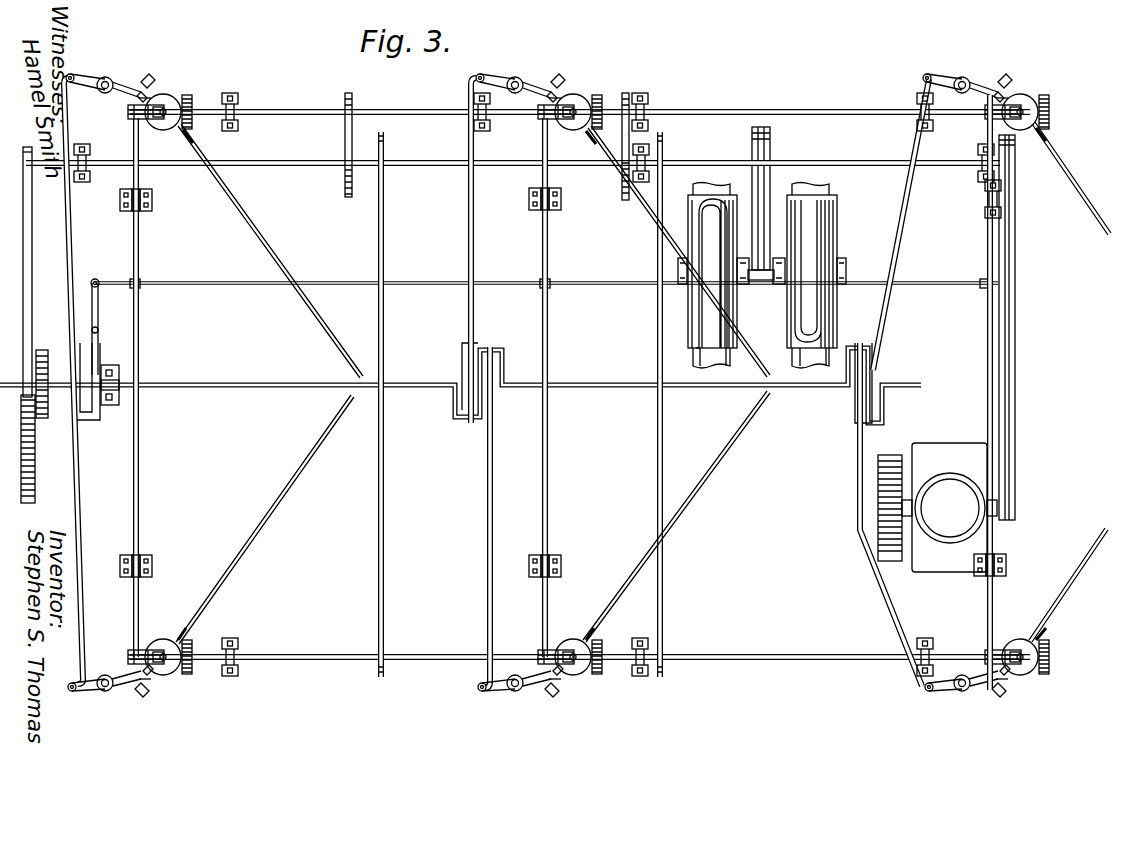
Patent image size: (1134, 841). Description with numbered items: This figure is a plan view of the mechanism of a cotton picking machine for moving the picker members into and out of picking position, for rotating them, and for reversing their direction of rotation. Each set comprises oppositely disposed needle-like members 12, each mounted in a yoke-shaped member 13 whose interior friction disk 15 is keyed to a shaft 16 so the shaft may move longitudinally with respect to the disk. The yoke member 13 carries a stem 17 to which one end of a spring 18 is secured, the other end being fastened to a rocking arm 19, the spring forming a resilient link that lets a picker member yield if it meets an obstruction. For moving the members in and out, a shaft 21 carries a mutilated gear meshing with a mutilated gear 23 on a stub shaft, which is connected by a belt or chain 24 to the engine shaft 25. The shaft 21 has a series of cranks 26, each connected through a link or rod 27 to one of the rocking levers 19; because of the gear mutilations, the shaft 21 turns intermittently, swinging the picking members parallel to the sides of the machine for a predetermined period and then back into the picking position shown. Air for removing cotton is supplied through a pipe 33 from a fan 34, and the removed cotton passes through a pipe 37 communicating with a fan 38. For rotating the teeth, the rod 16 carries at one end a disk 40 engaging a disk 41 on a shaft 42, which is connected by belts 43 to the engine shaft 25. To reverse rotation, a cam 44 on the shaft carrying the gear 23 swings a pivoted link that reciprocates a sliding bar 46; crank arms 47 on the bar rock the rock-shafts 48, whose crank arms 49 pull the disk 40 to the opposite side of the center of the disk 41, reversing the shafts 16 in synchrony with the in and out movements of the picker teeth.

The needle-like member 12 is at (255, 233).
The yoke-shaped member 13 is at (148, 88).
The friction disk 15 is at (98, 306).
The shaft 16 is at (163, 118).
The stem 17 is at (145, 82).
The spring 18 is at (140, 90).
The rocking arm 19 is at (115, 94).
The shaft 21 is at (231, 389).
The mutilated gear 23 is at (46, 418).
The belt or chain 24 is at (24, 248).
The engine shaft 25 is at (280, 166).
The cranks 26 is at (85, 352).
The link or rod 27 is at (68, 255).
The pipe 33 is at (830, 362).
The fan 34 is at (838, 230).
The pipe 37 is at (700, 370).
The fan 38 is at (738, 318).
The disk 40 is at (170, 95).
The disk 41 is at (192, 95).
The shaft 42 is at (755, 110).
The belts 43 is at (630, 96).
The cam 44 is at (118, 364).
The sliding bar 46 is at (231, 281).
The crank arms 47 is at (141, 287).
The rock-shafts 48 is at (139, 248).
The crank arms 49 is at (150, 105).